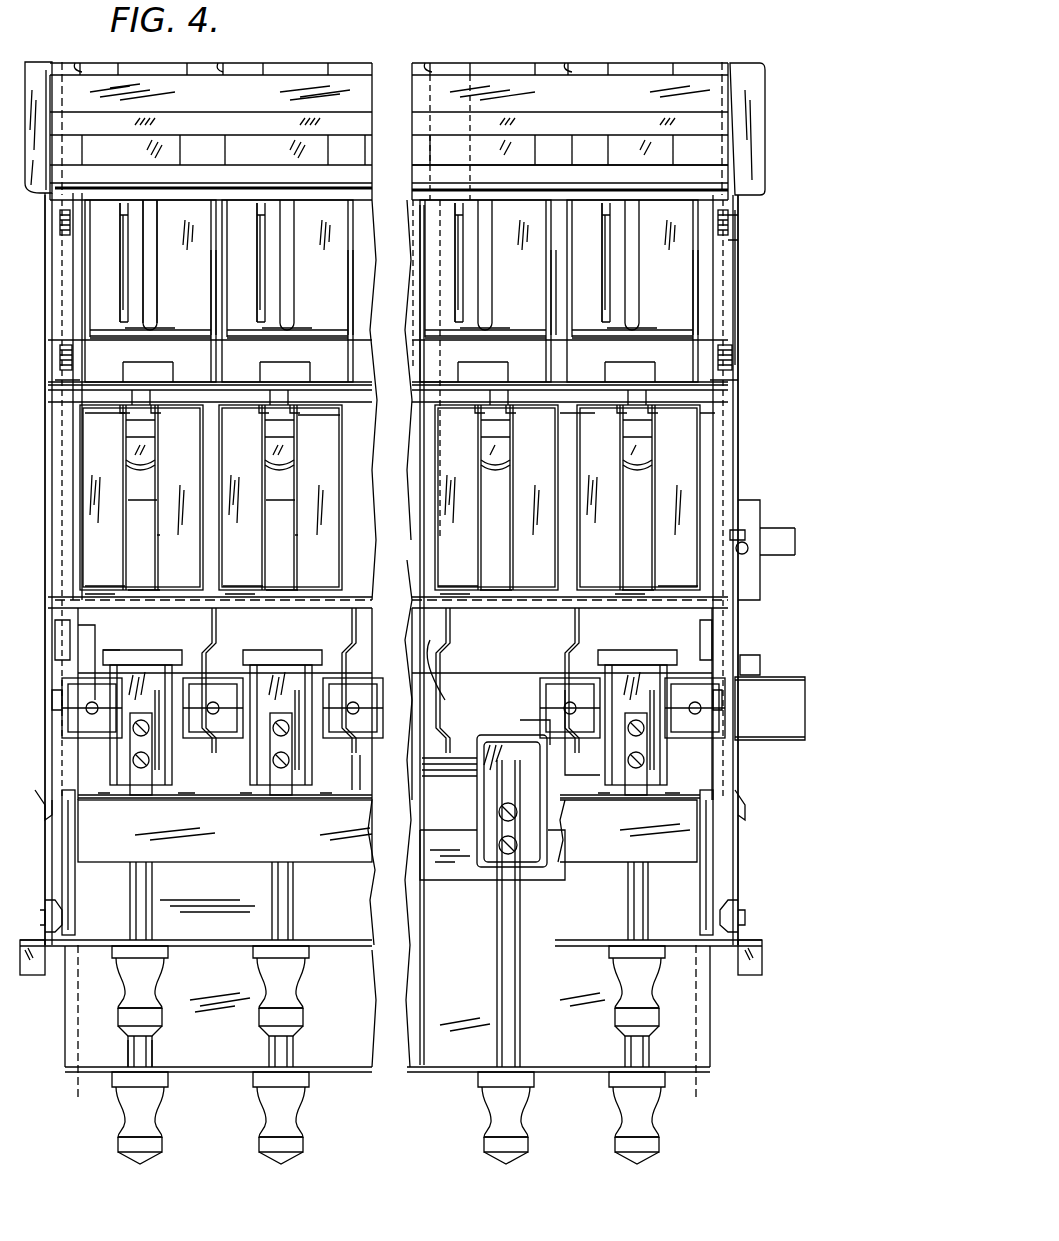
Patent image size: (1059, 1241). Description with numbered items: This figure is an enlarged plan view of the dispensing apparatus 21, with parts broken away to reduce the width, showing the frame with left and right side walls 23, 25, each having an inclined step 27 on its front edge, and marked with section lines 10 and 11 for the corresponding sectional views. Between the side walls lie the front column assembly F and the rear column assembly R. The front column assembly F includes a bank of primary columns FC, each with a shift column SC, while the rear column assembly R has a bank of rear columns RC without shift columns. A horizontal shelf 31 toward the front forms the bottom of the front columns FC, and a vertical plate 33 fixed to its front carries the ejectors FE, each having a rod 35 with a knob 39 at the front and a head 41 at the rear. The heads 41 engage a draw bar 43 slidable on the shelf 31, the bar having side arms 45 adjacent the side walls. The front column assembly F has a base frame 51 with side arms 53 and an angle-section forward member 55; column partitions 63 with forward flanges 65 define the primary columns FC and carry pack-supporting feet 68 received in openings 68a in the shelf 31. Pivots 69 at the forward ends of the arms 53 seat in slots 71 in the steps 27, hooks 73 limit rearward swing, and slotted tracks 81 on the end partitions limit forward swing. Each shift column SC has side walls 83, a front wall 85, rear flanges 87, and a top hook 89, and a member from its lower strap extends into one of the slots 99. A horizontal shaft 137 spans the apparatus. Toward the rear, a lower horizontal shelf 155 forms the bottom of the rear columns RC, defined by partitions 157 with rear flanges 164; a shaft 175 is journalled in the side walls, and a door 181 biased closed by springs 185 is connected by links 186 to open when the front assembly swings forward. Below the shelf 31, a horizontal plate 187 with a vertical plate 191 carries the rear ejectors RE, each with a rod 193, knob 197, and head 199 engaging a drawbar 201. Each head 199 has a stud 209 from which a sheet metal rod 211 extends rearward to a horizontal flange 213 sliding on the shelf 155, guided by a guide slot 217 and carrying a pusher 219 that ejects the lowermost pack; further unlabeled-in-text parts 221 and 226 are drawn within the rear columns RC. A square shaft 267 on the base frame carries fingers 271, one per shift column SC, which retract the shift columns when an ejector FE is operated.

The section line 10- 10 is at (747, 40).
The section line 11- 11 is at (60, 30).
The dispensing apparatus 21 is at (308, 50).
The left side wall 23 is at (48, 480).
The right side wall 25 is at (735, 460).
The inclined step 27 is at (45, 868).
The horizontal shelf 31 is at (362, 922).
The upstanding vertical plate 33 is at (200, 945).
The rod 35 is at (148, 912).
The knob 39 is at (160, 1014).
The head 41 is at (125, 668).
The draw bar 43 is at (355, 765).
The side arm 45 is at (58, 712).
The base frame 51 is at (194, 874).
The side arm 53 is at (75, 893).
The forward frame member 55 is at (248, 850).
The column partition 63 is at (80, 641).
The flange 65 is at (100, 800).
The pack-supporting foot 68 is at (86, 735).
The opening 68a is at (588, 738).
The pivot 69 is at (42, 912).
The slot 71 is at (45, 942).
The hook 73 is at (44, 822).
The slotted track 81 is at (60, 632).
The side wall 83 is at (82, 491).
The front wall 85 is at (108, 585).
The rear flange 87 is at (95, 418).
The hook 89 is at (142, 588).
The slot 99 is at (158, 540).
The horizontal shaft 137 is at (770, 528).
The horizontal shelf 155 is at (690, 312).
The partition 157 is at (85, 312).
The flange 164 is at (185, 205).
The horizontal shaft 175 is at (478, 163).
The door 181 is at (330, 372).
The spring 185 is at (725, 366).
The link 186 is at (720, 433).
The horizontal plate 187 is at (62, 1018).
The upstanding vertical plate 191 is at (68, 1072).
The rod 193 is at (148, 1048).
The knob 197 is at (258, 1146).
The head 199 is at (478, 812).
The drawbar 201 is at (450, 875).
The stud 209 is at (445, 775).
The rod 211 is at (82, 68).
The horizontal flange 213 is at (108, 63).
The guide slot 217 is at (148, 280).
The pusher 219 is at (178, 158).
The armature 221 is at (123, 235).
The armature pin 226 is at (122, 272).
The shaft 267 is at (290, 433).
The finger 271 is at (141, 470).
The front column assembly F is at (724, 610).
The primary column FC is at (128, 641).
The ejector FE is at (118, 987).
The rear column assembly R is at (723, 252).
The rear column RC is at (168, 210).
The ejector RE is at (248, 1120).
The shift column SC is at (150, 524).